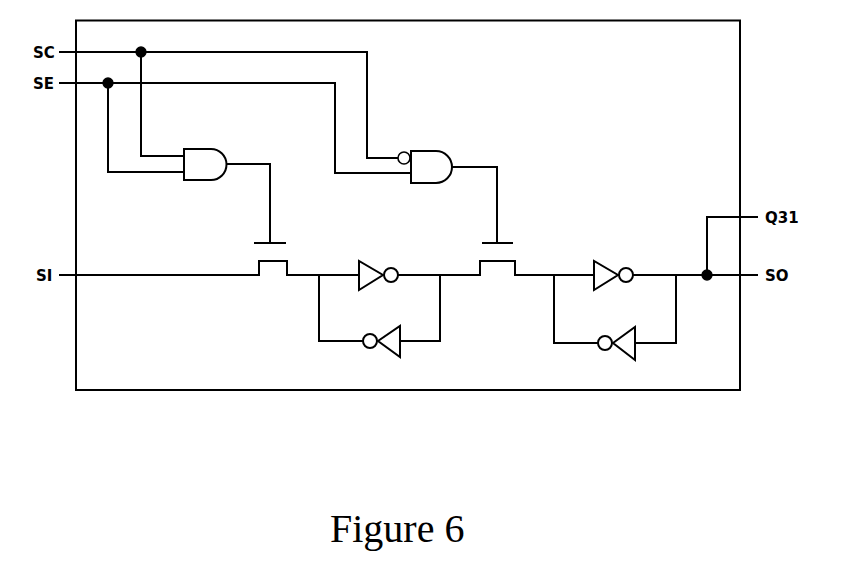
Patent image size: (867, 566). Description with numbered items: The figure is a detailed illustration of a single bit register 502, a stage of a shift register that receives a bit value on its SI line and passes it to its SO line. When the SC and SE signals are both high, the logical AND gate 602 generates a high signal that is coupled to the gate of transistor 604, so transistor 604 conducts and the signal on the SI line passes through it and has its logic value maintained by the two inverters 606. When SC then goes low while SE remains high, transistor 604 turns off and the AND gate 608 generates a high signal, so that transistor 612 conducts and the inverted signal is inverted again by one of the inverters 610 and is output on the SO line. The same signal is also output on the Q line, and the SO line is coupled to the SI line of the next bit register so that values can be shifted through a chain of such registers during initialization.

The bit register 502 is at (740, 128).
The logical AND gate 602 is at (196, 148).
The transistor 604 is at (279, 290).
The inverters 606 is at (373, 285).
The logical AND gate 608 is at (431, 151).
The inverters 610 is at (608, 284).
The transistor 612 is at (513, 253).